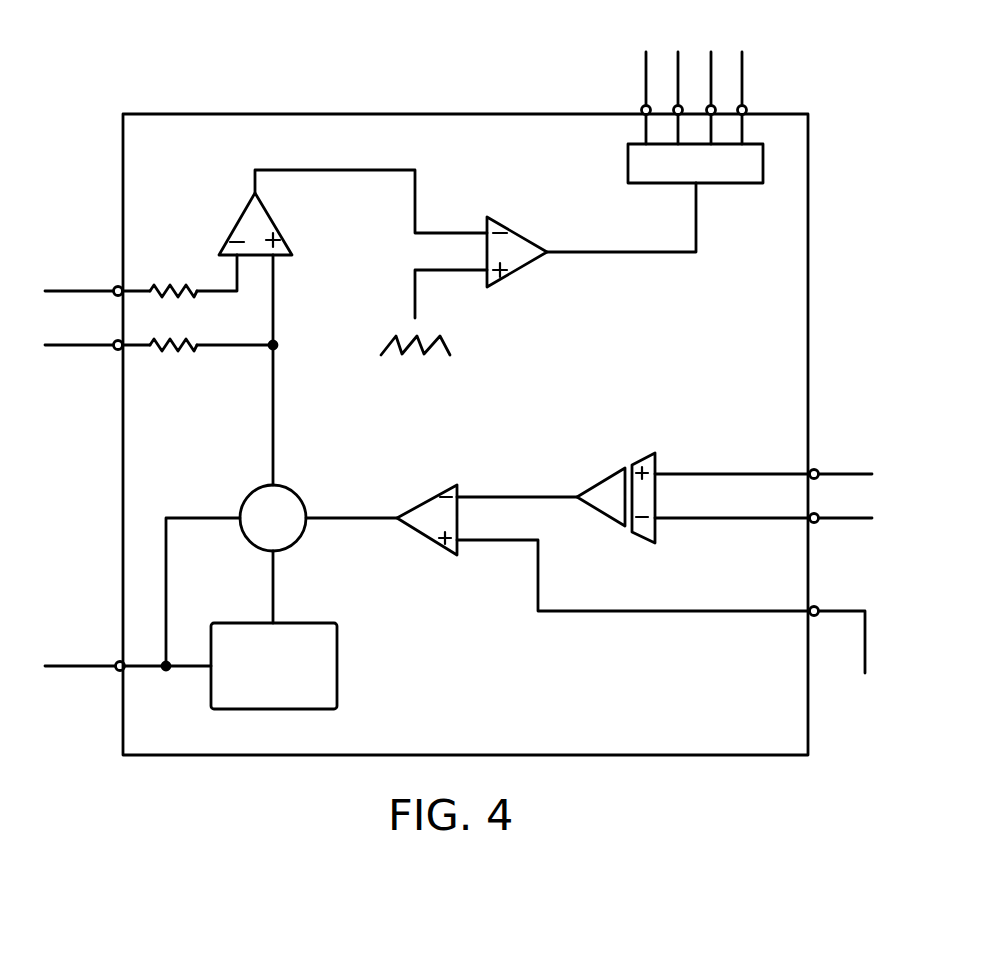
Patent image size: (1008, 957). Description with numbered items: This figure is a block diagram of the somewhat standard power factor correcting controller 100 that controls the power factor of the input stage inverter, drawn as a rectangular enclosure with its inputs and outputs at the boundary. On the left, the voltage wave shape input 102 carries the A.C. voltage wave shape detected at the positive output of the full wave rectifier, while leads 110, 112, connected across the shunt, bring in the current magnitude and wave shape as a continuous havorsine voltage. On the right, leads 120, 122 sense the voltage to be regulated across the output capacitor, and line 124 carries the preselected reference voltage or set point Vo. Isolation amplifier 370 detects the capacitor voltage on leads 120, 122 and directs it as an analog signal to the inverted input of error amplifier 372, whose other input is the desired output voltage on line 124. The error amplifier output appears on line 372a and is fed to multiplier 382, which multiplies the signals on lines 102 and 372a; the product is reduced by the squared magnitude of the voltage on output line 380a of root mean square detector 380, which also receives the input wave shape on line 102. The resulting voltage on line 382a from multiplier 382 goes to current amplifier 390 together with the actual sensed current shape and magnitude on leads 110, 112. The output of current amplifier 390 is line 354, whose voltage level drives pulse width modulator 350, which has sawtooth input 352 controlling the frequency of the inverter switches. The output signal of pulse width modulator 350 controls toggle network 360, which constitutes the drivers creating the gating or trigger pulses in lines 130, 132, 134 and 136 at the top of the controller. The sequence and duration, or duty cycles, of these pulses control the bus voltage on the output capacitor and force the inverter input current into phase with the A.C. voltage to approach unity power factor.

The power factor correcting controller 100 is at (812, 241).
The voltage wave shape input 102 is at (73, 665).
The lead 110 is at (83, 288).
The lead 112 is at (83, 347).
The lead 120 is at (848, 472).
The lead 122 is at (837, 522).
The reference voltage line 124 is at (845, 610).
The gating pulse line 130 is at (645, 72).
The gating pulse line 132 is at (711, 57).
The gating pulse line 134 is at (745, 83).
The gating pulse line 136 is at (678, 55).
The pulse width modulator 350 is at (518, 232).
The sawtooth input 352 is at (447, 272).
The current amplifier output line 354 is at (387, 167).
The toggle network 360 is at (742, 185).
The isolation amplifier 370 is at (618, 472).
The error amplifier 372 is at (437, 493).
The error amplifier output line 372a is at (342, 517).
The root mean square detector 380 is at (338, 643).
The root mean square detector output line 380a is at (275, 595).
The multiplier 382 is at (292, 488).
The multiplier output line 382a is at (275, 398).
The current amplifier 390 is at (272, 220).